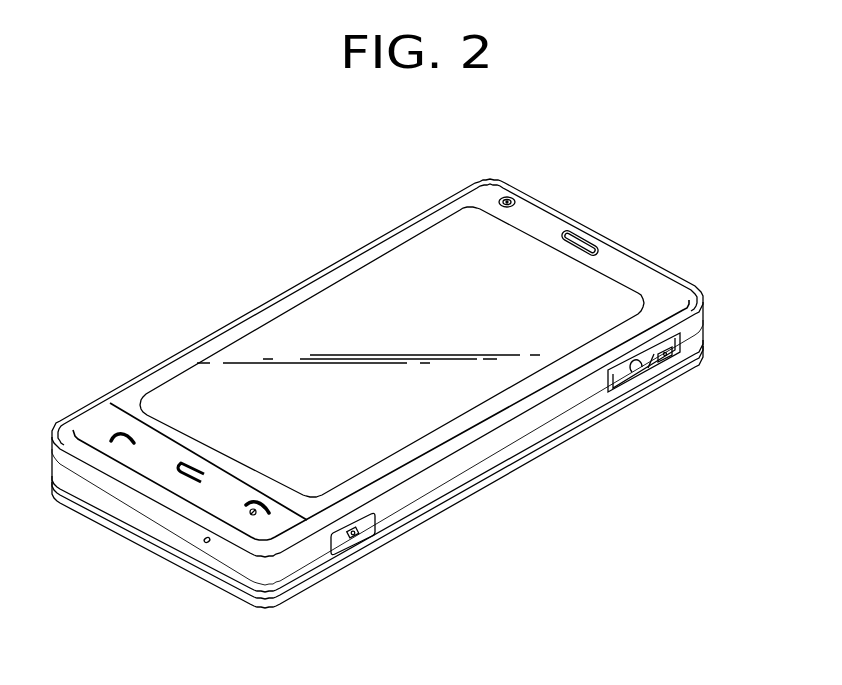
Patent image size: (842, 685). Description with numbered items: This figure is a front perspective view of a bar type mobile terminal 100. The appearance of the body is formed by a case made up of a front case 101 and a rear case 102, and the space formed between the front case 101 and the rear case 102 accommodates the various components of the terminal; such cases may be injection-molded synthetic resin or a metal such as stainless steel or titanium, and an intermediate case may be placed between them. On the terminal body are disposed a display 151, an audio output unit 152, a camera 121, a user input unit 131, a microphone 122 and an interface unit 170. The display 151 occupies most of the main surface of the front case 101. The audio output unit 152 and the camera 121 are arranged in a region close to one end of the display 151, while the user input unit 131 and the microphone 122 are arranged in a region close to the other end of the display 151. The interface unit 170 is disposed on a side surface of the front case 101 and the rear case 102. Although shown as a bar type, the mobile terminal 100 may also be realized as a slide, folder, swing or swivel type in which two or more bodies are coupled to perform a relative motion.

The mobile terminal 100 is at (393, 379).
The front case 101 is at (700, 321).
The rear case 102 is at (704, 353).
The camera 121 is at (512, 200).
The microphone 122 is at (205, 543).
The user input unit 131 is at (107, 432).
The display 151 is at (312, 304).
The audio output unit 152 is at (592, 244).
The interface unit 170 is at (634, 373).